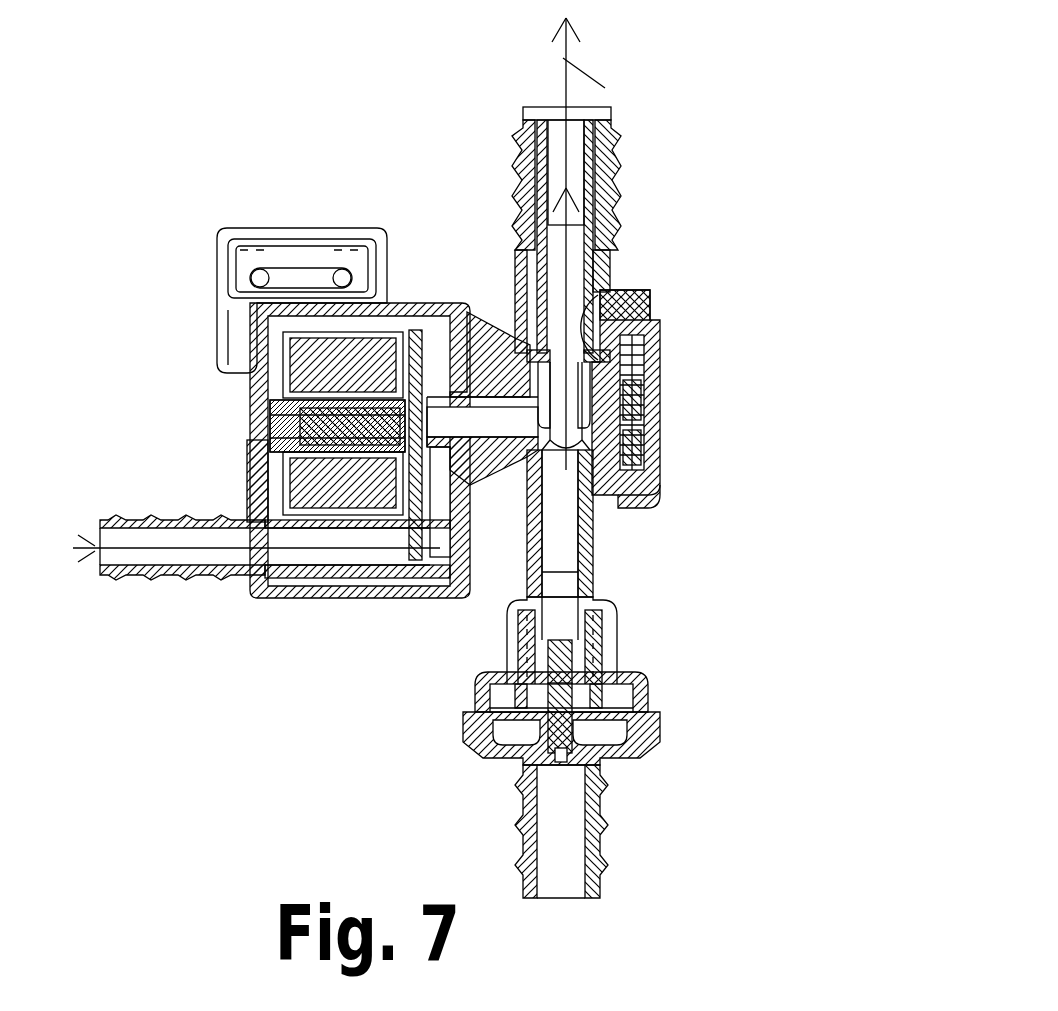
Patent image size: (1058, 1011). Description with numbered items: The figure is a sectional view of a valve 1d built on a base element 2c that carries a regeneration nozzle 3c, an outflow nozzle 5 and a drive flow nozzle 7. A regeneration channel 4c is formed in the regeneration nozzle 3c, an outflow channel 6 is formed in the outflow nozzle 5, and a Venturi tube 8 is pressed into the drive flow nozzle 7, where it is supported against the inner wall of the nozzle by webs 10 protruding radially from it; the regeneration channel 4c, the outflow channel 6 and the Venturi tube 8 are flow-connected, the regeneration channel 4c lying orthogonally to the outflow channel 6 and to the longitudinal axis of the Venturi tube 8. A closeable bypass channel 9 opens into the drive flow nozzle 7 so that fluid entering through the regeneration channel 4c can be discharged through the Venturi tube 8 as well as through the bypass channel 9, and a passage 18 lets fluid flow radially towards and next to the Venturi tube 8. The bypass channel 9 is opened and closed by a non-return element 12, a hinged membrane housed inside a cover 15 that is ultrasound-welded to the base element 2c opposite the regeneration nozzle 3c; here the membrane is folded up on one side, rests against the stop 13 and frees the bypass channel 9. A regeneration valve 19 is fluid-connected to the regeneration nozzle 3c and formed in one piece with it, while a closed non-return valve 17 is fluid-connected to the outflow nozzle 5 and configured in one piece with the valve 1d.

The valve 1d is at (652, 118).
The base element 2c is at (515, 190).
The regeneration nozzle 3c is at (528, 445).
The regeneration channel 4c is at (490, 418).
The outflow nozzle 5 is at (592, 524).
The outflow channel 6 is at (570, 553).
The drive flow nozzle 7 is at (510, 205).
The Venturi tube 8 is at (553, 148).
The bypass channel 9 is at (540, 350).
The webs 10 is at (600, 162).
The non-return element 12 is at (653, 373).
The stop 13 is at (657, 427).
The cover 15 is at (652, 492).
The non-return valve 17 is at (628, 760).
The passage 18 is at (632, 288).
The regeneration valve 19 is at (255, 493).